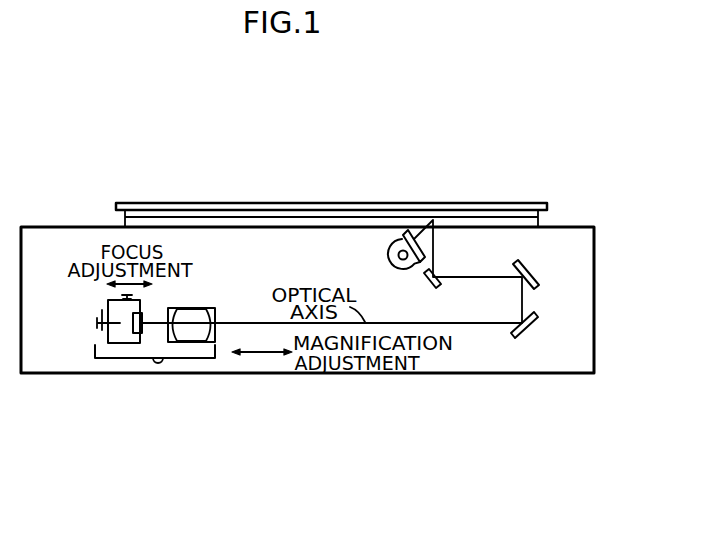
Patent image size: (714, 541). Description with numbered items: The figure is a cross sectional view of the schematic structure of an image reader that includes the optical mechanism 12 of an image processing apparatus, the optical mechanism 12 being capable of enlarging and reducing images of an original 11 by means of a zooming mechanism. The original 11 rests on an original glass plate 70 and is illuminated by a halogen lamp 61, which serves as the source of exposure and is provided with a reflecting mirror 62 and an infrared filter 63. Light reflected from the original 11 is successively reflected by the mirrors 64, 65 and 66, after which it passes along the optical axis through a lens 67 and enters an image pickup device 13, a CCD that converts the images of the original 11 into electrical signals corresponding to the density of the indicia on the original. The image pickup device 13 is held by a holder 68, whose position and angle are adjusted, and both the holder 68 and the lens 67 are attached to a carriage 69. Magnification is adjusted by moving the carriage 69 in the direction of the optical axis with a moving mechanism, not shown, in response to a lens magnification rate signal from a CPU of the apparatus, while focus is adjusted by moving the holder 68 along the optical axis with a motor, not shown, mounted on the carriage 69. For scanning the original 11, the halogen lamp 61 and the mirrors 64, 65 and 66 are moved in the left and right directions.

The original 11 is at (353, 217).
The optical mechanism 12 is at (463, 348).
The image pickup device 13 is at (123, 334).
The halogen lamp 61 is at (402, 268).
The reflecting mirror 62 is at (388, 250).
The infrared filter 63 is at (410, 232).
The mirror 64 is at (437, 289).
The mirror 65 is at (530, 272).
The mirror 66 is at (533, 315).
The lens 67 is at (197, 342).
The holder 68 is at (100, 327).
The carriage 69 is at (210, 358).
The original glass plate 70 is at (327, 229).